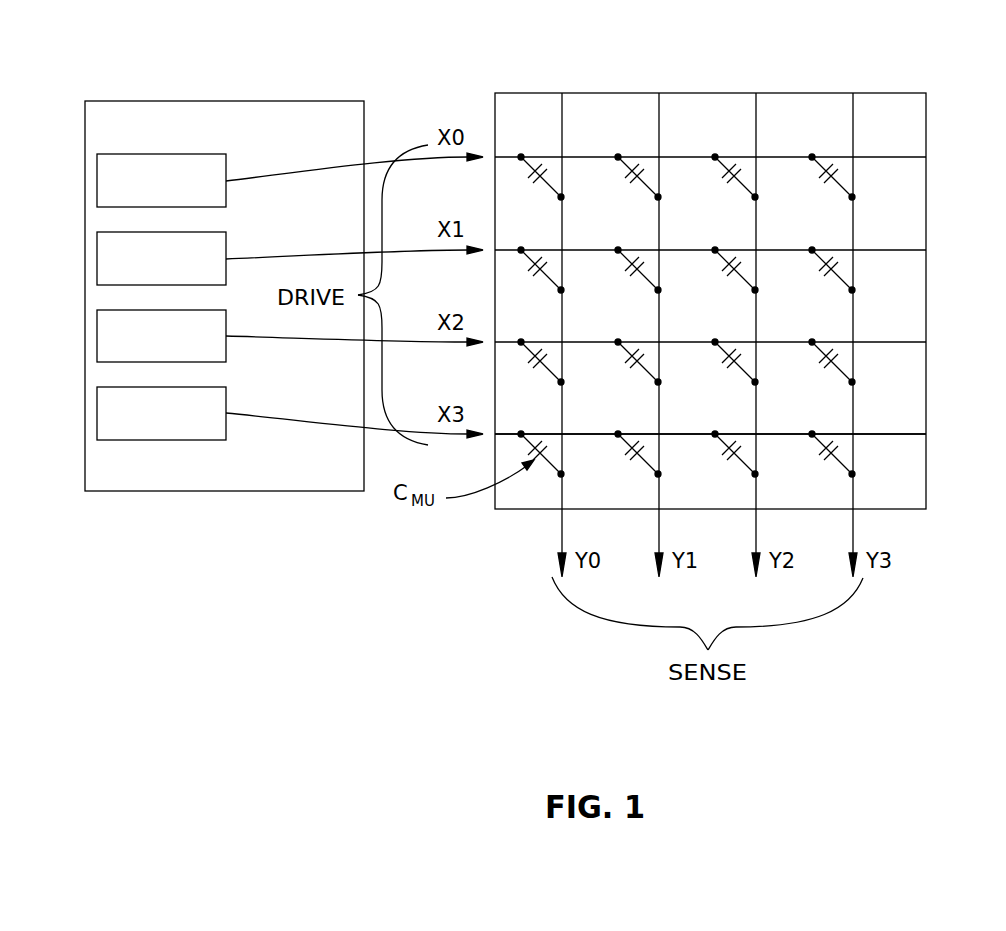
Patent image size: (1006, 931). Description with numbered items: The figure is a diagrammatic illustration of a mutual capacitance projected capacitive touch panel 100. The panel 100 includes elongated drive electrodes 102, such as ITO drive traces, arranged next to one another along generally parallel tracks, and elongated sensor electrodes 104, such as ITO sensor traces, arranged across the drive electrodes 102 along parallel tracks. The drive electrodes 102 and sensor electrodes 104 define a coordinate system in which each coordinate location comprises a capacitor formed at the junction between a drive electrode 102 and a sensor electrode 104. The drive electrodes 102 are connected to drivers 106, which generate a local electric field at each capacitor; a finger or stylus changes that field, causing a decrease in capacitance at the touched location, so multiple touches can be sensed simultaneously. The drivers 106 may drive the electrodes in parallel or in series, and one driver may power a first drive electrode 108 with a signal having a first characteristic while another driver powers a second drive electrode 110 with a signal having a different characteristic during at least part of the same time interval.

The capacitive touch panel 100 is at (820, 70).
The drive electrodes 102 is at (927, 342).
The sensor electrodes 104 is at (562, 93).
The drivers 106 is at (224, 101).
The drive electrode 108 is at (926, 157).
The drive electrode 110 is at (926, 434).